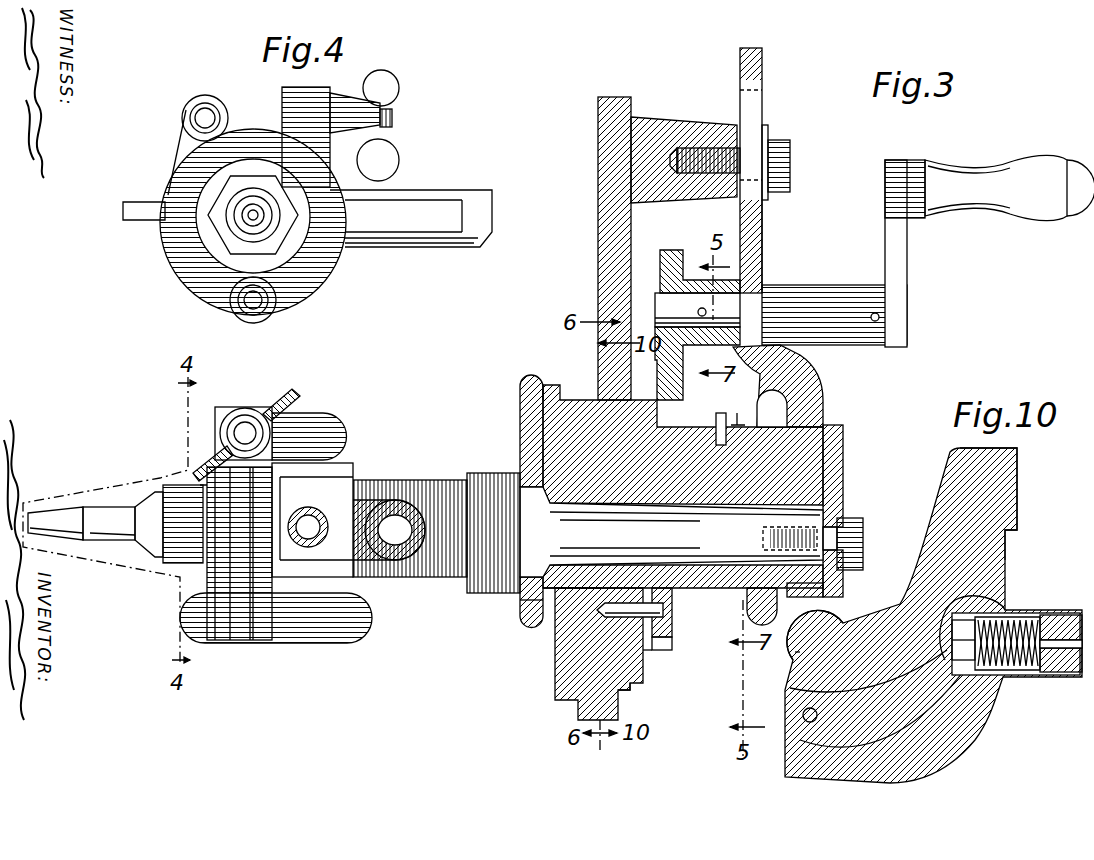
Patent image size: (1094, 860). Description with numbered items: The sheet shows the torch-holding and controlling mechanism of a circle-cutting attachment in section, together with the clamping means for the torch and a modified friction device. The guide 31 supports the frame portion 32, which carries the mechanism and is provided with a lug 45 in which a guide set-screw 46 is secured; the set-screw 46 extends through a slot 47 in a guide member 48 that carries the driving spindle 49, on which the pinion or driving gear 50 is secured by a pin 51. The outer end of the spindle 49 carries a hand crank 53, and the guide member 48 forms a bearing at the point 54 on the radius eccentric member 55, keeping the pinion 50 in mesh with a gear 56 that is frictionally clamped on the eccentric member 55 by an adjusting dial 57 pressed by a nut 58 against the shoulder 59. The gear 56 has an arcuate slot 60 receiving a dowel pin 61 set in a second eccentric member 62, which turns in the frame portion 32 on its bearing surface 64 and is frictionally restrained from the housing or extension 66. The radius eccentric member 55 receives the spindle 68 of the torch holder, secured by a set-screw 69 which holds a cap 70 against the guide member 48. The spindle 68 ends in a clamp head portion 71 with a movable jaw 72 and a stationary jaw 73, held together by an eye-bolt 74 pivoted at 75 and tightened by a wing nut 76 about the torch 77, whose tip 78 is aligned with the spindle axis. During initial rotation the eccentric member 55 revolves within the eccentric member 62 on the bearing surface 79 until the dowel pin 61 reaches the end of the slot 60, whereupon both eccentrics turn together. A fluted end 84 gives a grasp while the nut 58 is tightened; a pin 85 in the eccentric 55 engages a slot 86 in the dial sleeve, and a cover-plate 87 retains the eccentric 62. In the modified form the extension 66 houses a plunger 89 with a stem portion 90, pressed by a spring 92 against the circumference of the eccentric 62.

In FIG. 10, the guide 31 is at (1012, 492).
In FIG. 3, the frame portion 32 is at (598, 240).
In FIG. 3, the lug 45 is at (650, 118).
In FIG. 3, the guide set-screw 46 is at (790, 170).
In FIG. 3, the opening or slot 47 is at (763, 100).
In FIG. 3, the guide member 48 is at (762, 243).
In FIG. 3, the driving spindle 49 is at (666, 300).
In FIG. 3, the driving gear (pinion) 50 is at (672, 256).
In FIG. 3, the pin 51 is at (697, 363).
In FIG. 3, the hand crank 53 is at (897, 253).
In FIG. 3, the bearing point 54 is at (815, 425).
In FIG. 3, the radius eccentric member 55 is at (843, 445).
In FIG. 10, the radius eccentric member 55 is at (880, 622).
In FIG. 3, the gear 56 is at (672, 645).
In FIG. 3, the adjusting dial 57 is at (690, 605).
In FIG. 3, the nut 58 is at (812, 383).
In FIG. 3, the shoulder 59 is at (600, 603).
In FIG. 3, the arcuate slot 60 is at (676, 618).
In FIG. 3, the dowel pin 61 is at (652, 652).
In FIG. 10, the dowel pin 61 is at (803, 715).
In FIG. 3, the second eccentric member 62 is at (557, 680).
In FIG. 10, the second eccentric member 62 is at (940, 690).
In FIG. 3, the bearing surface 64 is at (572, 378).
In FIG. 10, the housing or extension 66 is at (1030, 615).
In FIG. 3, the spindle 68 is at (845, 478).
In FIG. 10, the spindle 68 is at (795, 654).
In FIG. 3, the set-screw 69 is at (863, 532).
In FIG. 3, the cap 70 is at (843, 582).
In FIG. 3, the clamp head portion 71 is at (392, 480).
In FIG. 4, the movable jaw 72 is at (340, 250).
In FIG. 3, the movable jaw 72 is at (340, 645).
In FIG. 4, the stationary jaw 73 is at (200, 262).
In FIG. 3, the stationary jaw 73 is at (235, 590).
In FIG. 4, the eye-bolt 74 is at (395, 127).
In FIG. 3, the eye-bolt 74 is at (245, 428).
In FIG. 4, the pivot 75 is at (205, 118).
In FIG. 3, the pivot 75 is at (340, 432).
In FIG. 4, the wing or butterfly nut 76 is at (398, 91).
In FIG. 3, the wing or butterfly nut 76 is at (293, 390).
In FIG. 4, the torch or blow-pipe 77 is at (210, 230).
In FIG. 3, the torch or blow-pipe 77 is at (355, 578).
In FIG. 3, the tip 78 is at (105, 505).
In FIG. 3, the bearing surface 79 is at (520, 428).
In FIG. 3, the fluted end 84 is at (516, 618).
In FIG. 3, the pin 85 is at (720, 413).
In FIG. 3, the slot 86 is at (746, 408).
In FIG. 3, the cover-plate 87 is at (643, 683).
In FIG. 10, the plunger 89 is at (1000, 668).
In FIG. 10, the stem portion 90 is at (1040, 674).
In FIG. 10, the spring 92 is at (1058, 613).